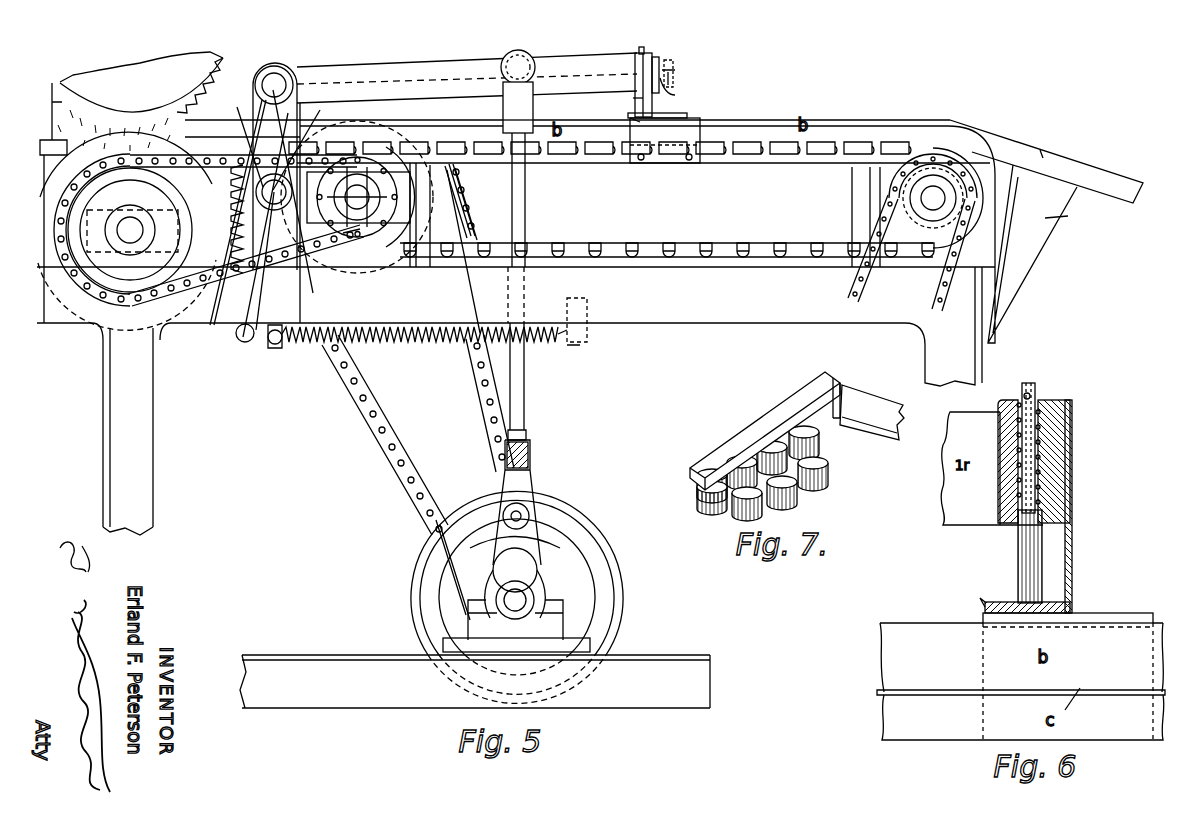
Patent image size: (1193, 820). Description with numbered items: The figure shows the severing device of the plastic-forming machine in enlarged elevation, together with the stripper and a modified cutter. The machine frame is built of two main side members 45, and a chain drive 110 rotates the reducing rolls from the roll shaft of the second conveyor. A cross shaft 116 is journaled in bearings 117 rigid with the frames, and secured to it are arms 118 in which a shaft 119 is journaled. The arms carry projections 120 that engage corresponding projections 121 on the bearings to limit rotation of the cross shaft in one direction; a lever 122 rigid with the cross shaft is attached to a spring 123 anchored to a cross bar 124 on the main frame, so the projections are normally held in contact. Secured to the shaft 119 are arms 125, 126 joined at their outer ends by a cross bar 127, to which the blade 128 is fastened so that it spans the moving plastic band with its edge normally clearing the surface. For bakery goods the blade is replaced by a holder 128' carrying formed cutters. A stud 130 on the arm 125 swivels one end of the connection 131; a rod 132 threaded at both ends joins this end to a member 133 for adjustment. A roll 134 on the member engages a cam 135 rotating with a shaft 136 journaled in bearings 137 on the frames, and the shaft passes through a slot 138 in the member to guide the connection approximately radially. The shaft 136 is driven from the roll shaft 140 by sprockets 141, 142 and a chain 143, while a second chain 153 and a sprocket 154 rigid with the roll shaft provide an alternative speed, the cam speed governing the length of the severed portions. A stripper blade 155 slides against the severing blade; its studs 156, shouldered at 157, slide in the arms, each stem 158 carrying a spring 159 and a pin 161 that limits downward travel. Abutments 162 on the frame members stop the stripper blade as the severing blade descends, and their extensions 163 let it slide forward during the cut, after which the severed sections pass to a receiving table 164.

In FIG. 5, the main side members 45 is at (678, 316).
In FIG. 5, the chain drive 110 is at (256, 330).
In FIG. 5, the cross shaft 116 is at (237, 137).
In FIG. 5, the bearings 117 is at (212, 325).
In FIG. 5, the arms 118 is at (254, 104).
In FIG. 5, the shaft 119 is at (279, 82).
In FIG. 5, the projections 120 is at (255, 180).
In FIG. 5, the projections 121 is at (231, 170).
In FIG. 5, the lever 122 is at (280, 346).
In FIG. 5, the spring 123 is at (422, 345).
In FIG. 5, the cross bar 124 is at (590, 337).
In FIG. 5, the arm 125 is at (566, 70).
In FIG. 6, the arm 125 is at (971, 477).
In FIG. 7, the arm 126 is at (877, 400).
In FIG. 5, the cross bar 127 is at (660, 58).
In FIG. 7, the cross bar 127 is at (843, 381).
In FIG. 5, the blade 128 is at (689, 77).
In FIG. 7, the holder 128' is at (753, 446).
In FIG. 5, the stud 130 is at (521, 60).
In FIG. 5, the connection 131 is at (535, 103).
In FIG. 5, the rod 132 is at (527, 182).
In FIG. 5, the member 133 is at (526, 476).
In FIG. 5, the roll 134 is at (532, 491).
In FIG. 5, the cam 135 is at (572, 536).
In FIG. 5, the shaft 136 is at (521, 597).
In FIG. 5, the bearings 137 is at (553, 621).
In FIG. 5, the slot 138 is at (534, 572).
In FIG. 5, the roll shaft 140 is at (358, 205).
In FIG. 5, the sprocket 141 is at (343, 233).
In FIG. 5, the sprocket 142 is at (560, 596).
In FIG. 5, the chain 143 is at (483, 385).
In FIG. 5, the chain 153 is at (525, 377).
In FIG. 5, the sprocket 154 is at (465, 222).
In FIG. 5, the stripper blade 155 is at (672, 113).
In FIG. 6, the stripper blade 155 is at (1073, 583).
In FIG. 5, the studs 156 is at (641, 100).
In FIG. 6, the studs 156 is at (1035, 566).
In FIG. 6, the shoulder 157 is at (1040, 510).
In FIG. 5, the stem 158 is at (644, 49).
In FIG. 6, the stem 158 is at (1036, 390).
In FIG. 6, the spring 159 is at (1040, 432).
In FIG. 5, the pin 161 is at (637, 55).
In FIG. 6, the pin 161 is at (1020, 394).
In FIG. 5, the abutments 162 is at (634, 120).
In FIG. 6, the abutments 162 is at (985, 605).
In FIG. 5, the extensions 163 is at (692, 118).
In FIG. 6, the extensions 163 is at (1121, 612).
In FIG. 5, the receiving table 164 is at (1093, 190).